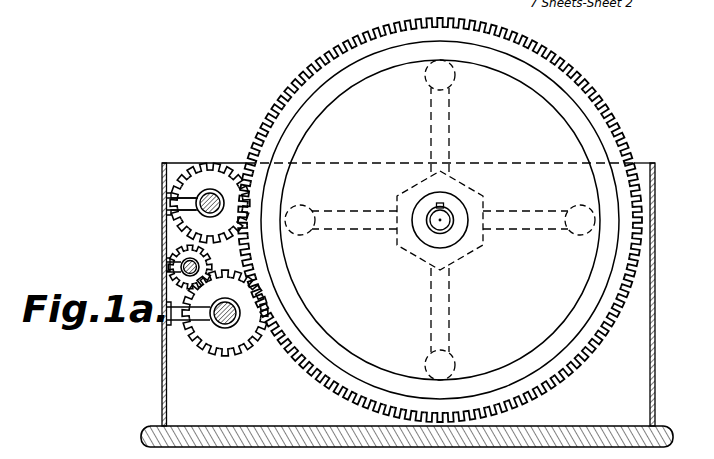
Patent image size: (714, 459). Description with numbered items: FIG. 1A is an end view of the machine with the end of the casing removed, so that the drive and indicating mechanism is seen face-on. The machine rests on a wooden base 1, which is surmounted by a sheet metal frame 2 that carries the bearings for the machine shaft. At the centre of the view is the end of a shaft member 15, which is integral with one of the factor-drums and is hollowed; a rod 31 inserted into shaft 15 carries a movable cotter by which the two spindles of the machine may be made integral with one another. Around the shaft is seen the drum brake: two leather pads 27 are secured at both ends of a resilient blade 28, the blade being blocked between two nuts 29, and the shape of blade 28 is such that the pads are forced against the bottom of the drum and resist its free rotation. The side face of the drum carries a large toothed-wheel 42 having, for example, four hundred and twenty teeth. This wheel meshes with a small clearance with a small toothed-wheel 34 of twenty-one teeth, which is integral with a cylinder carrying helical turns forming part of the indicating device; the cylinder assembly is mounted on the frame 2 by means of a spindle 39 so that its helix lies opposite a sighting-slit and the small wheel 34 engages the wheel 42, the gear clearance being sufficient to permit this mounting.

The wooden base 1 is at (244, 426).
The sheet metal frame 2 is at (160, 393).
The shaft member 15 is at (430, 232).
The leather pads 27 is at (456, 84).
The resilient blade 28 is at (452, 128).
The nuts 29 is at (479, 190).
The rod 31 is at (443, 229).
The toothed-wheel 34 is at (209, 162).
The spindle 39 is at (200, 209).
The toothed-wheel 42 is at (258, 262).